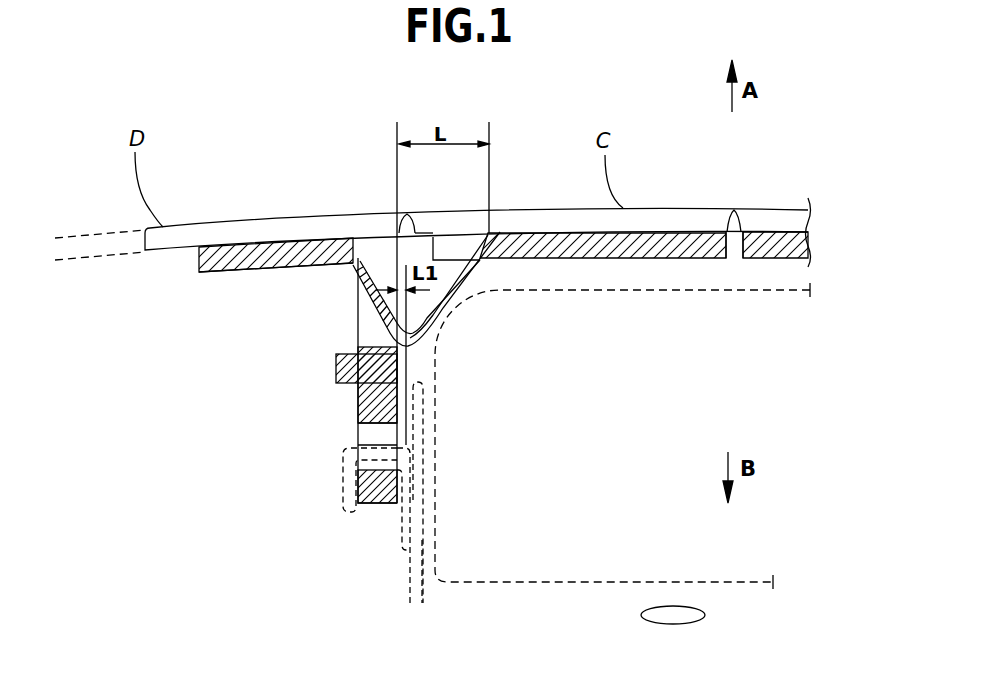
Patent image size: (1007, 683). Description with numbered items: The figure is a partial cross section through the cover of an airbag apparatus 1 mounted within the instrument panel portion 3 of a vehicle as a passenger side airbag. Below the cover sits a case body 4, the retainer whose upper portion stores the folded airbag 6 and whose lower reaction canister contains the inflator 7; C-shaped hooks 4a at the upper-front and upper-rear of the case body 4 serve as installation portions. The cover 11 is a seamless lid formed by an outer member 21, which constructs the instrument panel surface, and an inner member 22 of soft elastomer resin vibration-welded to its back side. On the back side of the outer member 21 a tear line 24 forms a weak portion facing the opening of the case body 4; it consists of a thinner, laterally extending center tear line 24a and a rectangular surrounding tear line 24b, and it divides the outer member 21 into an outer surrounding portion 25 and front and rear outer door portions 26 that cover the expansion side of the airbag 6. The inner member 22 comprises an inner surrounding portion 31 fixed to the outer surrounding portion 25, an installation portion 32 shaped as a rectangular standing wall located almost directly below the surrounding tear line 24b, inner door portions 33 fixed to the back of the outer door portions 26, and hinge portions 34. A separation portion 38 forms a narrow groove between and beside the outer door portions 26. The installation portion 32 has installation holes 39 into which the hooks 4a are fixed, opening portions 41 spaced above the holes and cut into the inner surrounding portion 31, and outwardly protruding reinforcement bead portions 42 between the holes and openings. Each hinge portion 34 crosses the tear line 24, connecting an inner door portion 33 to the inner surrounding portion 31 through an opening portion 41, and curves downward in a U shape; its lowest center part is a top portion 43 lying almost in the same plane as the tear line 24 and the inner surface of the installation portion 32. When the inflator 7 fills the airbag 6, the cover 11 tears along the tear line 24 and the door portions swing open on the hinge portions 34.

The airbag apparatus 1 is at (217, 103).
The instrument panel portion 3 is at (84, 238).
The case body 4 is at (410, 583).
The hooks 4a is at (342, 478).
The airbag 6 is at (402, 558).
The inflator 7 is at (678, 617).
The cover 11 is at (775, 208).
The outer member 21 is at (172, 242).
The inner member 22 is at (198, 262).
The tear line 24 is at (397, 205).
The center tear line 24a is at (734, 210).
The surrounding tear line 24b is at (397, 205).
The outer surrounding portion 25 is at (190, 238).
The outer door portions 26 is at (810, 220).
The inner surrounding portion 31 is at (240, 253).
The installation portion 32 is at (375, 438).
The inner door portions 33 is at (583, 248).
The hinge portion 34 is at (452, 310).
The separation portion 38 is at (734, 252).
The installation holes 39 is at (357, 440).
The opening portions 41 is at (368, 340).
The reinforcement bead portions 42 is at (336, 373).
The top portion 43 is at (415, 348).